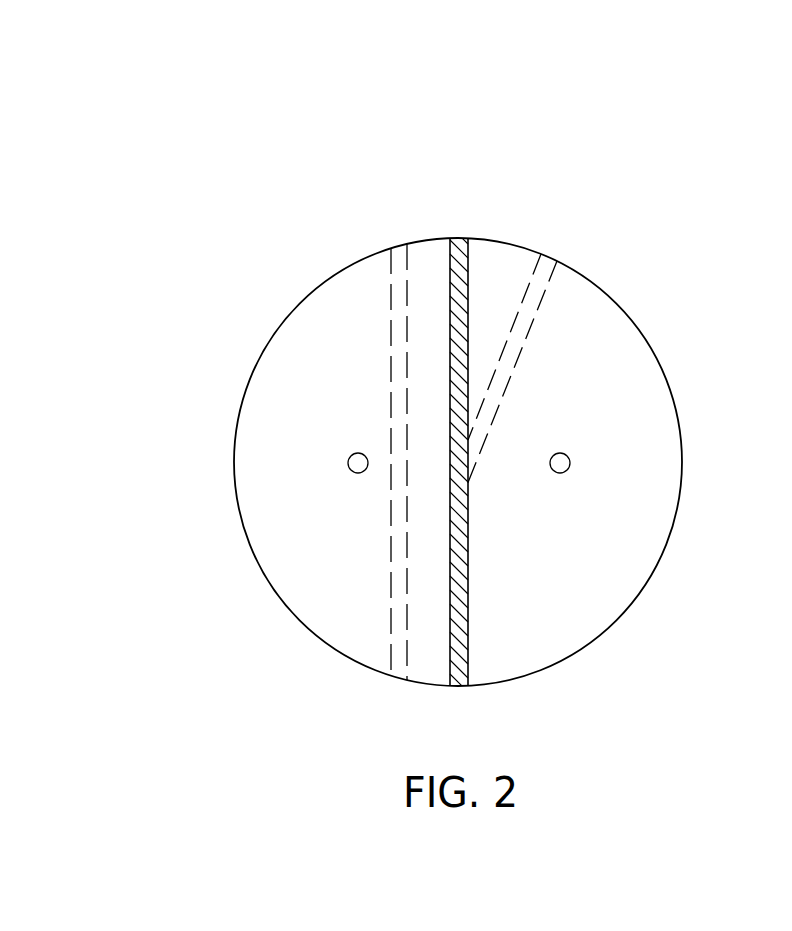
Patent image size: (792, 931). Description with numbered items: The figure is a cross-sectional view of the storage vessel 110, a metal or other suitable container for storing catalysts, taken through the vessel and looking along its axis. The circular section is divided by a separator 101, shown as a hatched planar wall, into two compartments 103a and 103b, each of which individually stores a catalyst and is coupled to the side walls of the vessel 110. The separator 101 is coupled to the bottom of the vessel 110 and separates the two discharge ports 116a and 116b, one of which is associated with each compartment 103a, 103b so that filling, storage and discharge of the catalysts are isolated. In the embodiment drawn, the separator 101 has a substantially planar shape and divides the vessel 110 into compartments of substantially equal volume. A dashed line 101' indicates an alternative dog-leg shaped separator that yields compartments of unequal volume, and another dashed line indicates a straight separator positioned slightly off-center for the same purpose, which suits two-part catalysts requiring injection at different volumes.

The storage vessel 110 is at (318, 288).
The separator 101 is at (470, 399).
The dashed line indicating dog-leg separator 101' is at (512, 320).
The compartment 103a is at (347, 405).
The compartment 103b is at (615, 405).
The discharge port 116a is at (352, 470).
The discharge port 116b is at (568, 467).